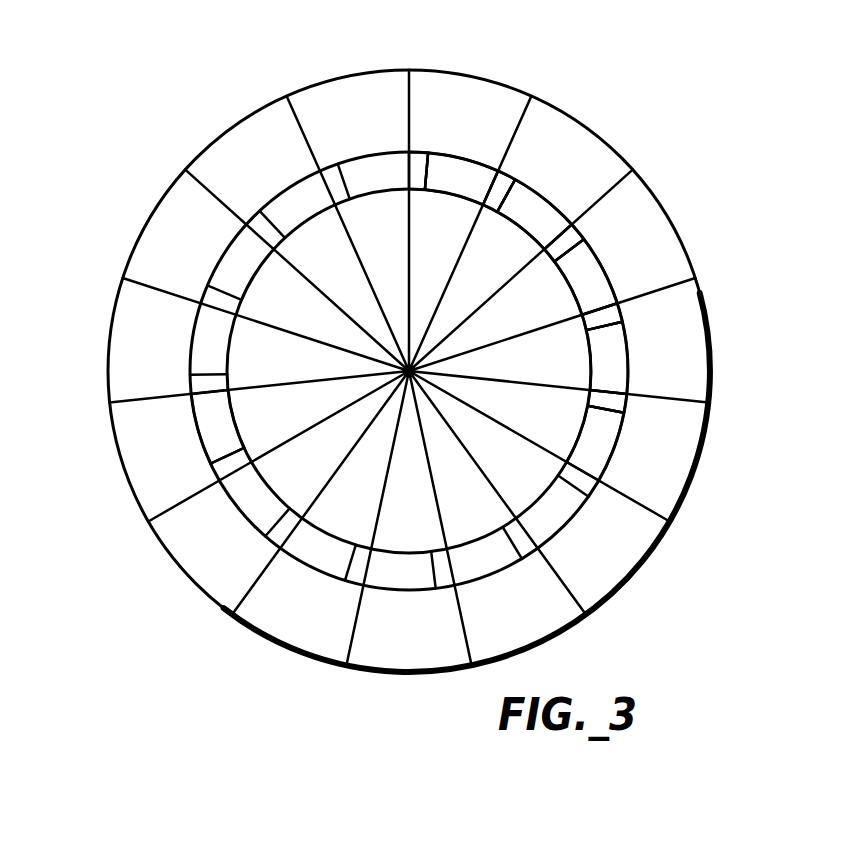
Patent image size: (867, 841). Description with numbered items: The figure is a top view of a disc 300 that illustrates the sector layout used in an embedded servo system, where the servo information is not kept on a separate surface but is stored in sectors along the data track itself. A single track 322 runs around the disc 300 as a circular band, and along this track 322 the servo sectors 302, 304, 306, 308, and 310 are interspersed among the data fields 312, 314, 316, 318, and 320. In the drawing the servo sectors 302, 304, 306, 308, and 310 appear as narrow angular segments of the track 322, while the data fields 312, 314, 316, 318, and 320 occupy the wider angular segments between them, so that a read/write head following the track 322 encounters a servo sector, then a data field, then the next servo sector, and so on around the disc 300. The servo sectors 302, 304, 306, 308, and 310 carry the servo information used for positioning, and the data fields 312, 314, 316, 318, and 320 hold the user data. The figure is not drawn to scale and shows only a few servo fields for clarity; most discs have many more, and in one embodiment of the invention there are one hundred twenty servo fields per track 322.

The disc 300 is at (183, 103).
The servo sector 302 is at (415, 165).
The servo sector 304 is at (498, 190).
The servo sector 306 is at (563, 243).
The servo sector 308 is at (597, 315).
The servo sector 310 is at (617, 398).
The data field 312 is at (452, 173).
The data field 314 is at (533, 215).
The data field 316 is at (585, 283).
The data field 318 is at (618, 372).
The data field 320 is at (600, 433).
The track 322 is at (197, 422).